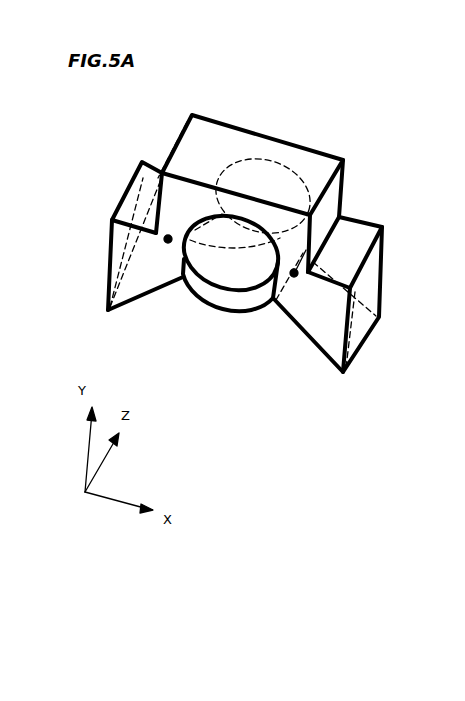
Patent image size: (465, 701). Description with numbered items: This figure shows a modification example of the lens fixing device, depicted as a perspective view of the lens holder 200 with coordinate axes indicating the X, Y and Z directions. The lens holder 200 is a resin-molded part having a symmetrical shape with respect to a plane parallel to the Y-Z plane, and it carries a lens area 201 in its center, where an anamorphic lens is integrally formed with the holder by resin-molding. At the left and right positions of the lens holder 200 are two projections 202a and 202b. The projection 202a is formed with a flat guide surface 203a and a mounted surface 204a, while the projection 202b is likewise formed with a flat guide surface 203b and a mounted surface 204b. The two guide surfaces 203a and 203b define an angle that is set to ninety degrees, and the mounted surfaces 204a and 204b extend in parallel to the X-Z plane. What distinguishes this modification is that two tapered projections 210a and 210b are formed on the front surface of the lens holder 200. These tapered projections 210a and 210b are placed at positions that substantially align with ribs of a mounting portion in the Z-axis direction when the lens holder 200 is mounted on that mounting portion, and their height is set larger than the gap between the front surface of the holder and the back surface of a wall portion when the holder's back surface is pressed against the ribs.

The lens holder 200 is at (287, 143).
The lens area 201 is at (223, 262).
The projection 202a is at (106, 232).
The projection 202b is at (363, 295).
The flat guide surface 203a is at (123, 310).
The flat guide surface 203b is at (320, 355).
The mounted surface 204a is at (131, 194).
The mounted surface 204b is at (354, 232).
The tapered projection 210a is at (170, 244).
The tapered projection 210b is at (292, 278).